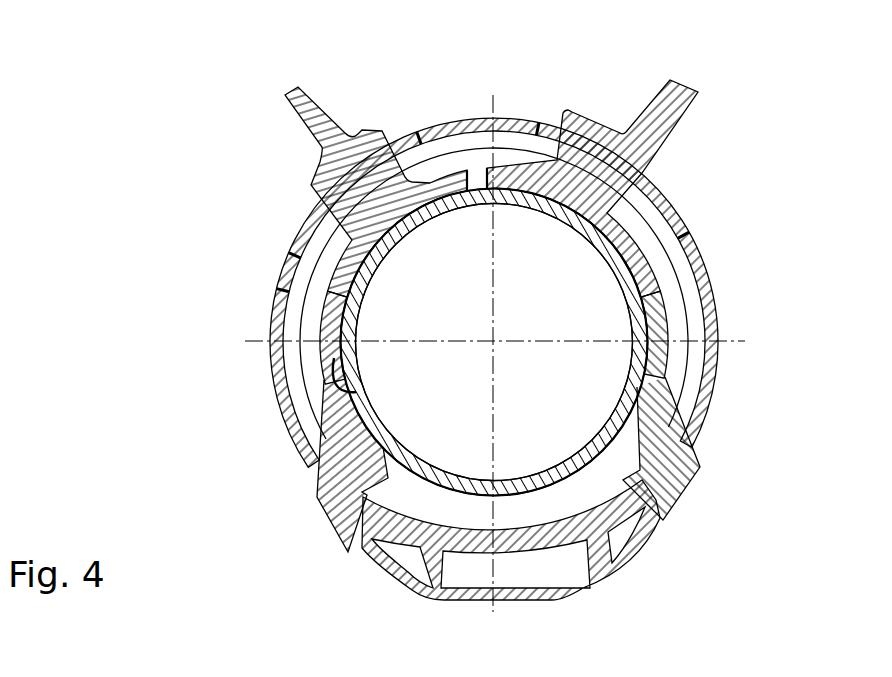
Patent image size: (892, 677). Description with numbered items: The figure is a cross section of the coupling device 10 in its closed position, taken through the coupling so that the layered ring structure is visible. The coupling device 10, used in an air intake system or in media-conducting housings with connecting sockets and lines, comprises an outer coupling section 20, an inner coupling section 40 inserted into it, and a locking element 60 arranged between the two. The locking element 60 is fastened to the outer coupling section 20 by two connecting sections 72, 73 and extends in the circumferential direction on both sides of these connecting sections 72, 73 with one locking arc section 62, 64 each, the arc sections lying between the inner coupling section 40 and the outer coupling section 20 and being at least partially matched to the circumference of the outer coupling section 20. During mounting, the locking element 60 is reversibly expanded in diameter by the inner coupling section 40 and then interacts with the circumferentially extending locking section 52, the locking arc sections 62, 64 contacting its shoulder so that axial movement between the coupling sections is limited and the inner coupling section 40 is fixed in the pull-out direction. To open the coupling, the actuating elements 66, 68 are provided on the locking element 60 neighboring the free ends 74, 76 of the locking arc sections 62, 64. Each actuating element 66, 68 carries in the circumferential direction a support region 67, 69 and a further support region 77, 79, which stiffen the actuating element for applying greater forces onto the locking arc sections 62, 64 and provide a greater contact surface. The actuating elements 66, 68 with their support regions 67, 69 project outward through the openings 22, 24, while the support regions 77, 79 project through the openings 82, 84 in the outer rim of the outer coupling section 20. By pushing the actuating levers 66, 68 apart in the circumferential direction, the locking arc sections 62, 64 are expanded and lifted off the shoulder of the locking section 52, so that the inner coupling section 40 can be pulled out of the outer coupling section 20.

The coupling device 10 is at (806, 124).
The outer coupling section 20 is at (270, 352).
The opening 22 is at (302, 230).
The opening 24 is at (668, 204).
The inner coupling section 40 is at (372, 257).
The locking section 52 is at (356, 392).
The locking element 60 is at (485, 321).
The locking arc section 62 is at (330, 300).
The locking arc section 64 is at (650, 290).
The actuating element 66 is at (350, 155).
The support region 67 is at (372, 130).
The actuating element 68 is at (624, 164).
The support region 69 is at (572, 115).
The connecting section 72 is at (425, 570).
The connecting section 73 is at (596, 552).
The free end 74 is at (466, 175).
The free end 76 is at (487, 175).
The support region 77 is at (332, 528).
The support region 79 is at (686, 490).
The opening 82 is at (310, 470).
The opening 84 is at (700, 443).